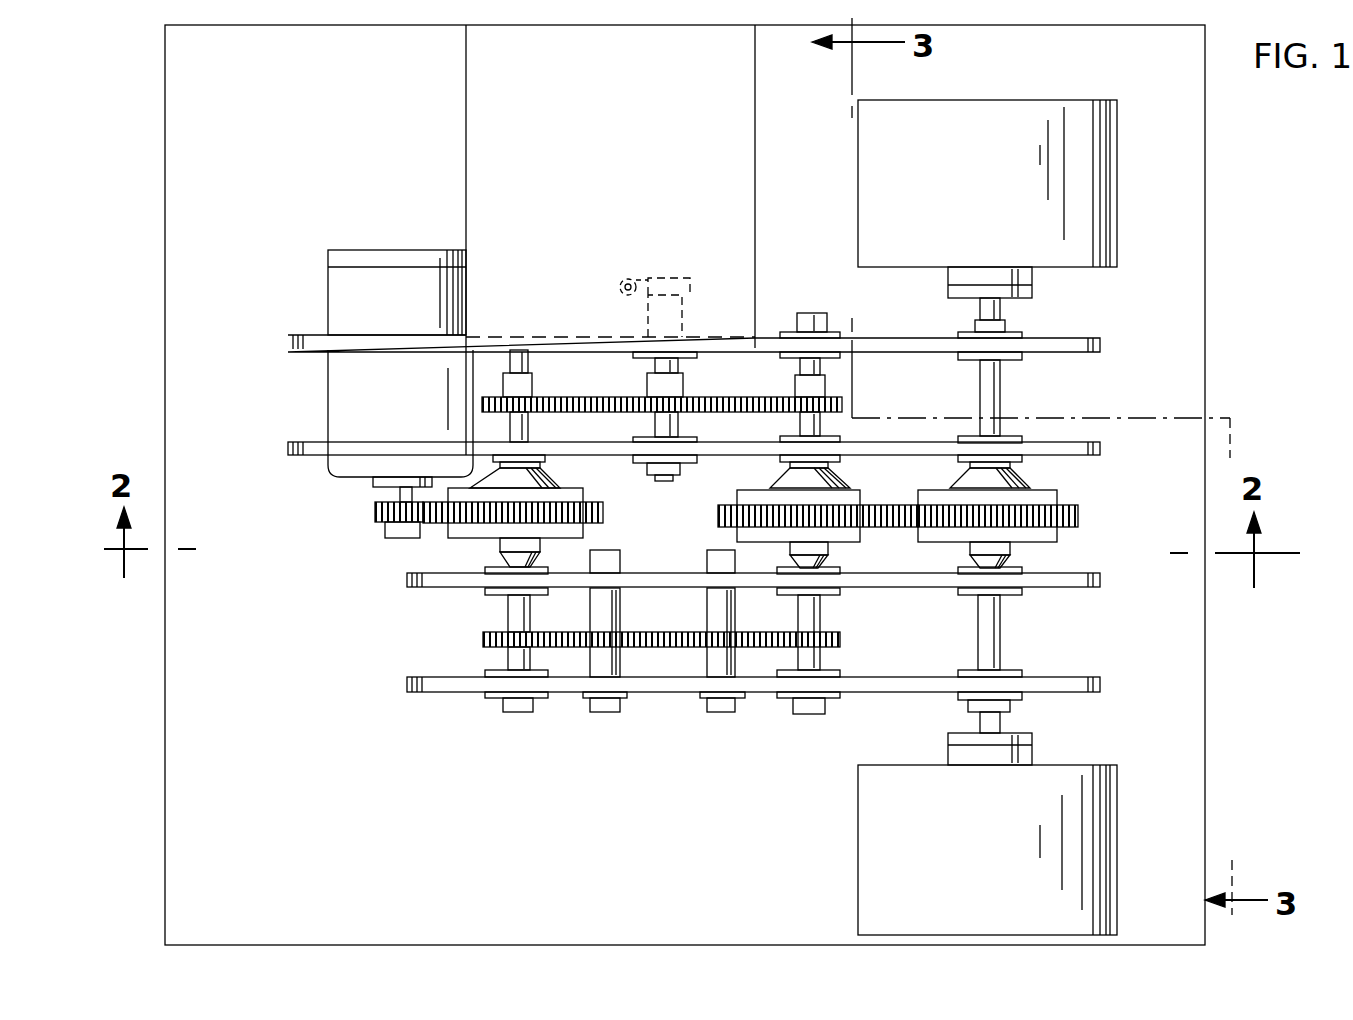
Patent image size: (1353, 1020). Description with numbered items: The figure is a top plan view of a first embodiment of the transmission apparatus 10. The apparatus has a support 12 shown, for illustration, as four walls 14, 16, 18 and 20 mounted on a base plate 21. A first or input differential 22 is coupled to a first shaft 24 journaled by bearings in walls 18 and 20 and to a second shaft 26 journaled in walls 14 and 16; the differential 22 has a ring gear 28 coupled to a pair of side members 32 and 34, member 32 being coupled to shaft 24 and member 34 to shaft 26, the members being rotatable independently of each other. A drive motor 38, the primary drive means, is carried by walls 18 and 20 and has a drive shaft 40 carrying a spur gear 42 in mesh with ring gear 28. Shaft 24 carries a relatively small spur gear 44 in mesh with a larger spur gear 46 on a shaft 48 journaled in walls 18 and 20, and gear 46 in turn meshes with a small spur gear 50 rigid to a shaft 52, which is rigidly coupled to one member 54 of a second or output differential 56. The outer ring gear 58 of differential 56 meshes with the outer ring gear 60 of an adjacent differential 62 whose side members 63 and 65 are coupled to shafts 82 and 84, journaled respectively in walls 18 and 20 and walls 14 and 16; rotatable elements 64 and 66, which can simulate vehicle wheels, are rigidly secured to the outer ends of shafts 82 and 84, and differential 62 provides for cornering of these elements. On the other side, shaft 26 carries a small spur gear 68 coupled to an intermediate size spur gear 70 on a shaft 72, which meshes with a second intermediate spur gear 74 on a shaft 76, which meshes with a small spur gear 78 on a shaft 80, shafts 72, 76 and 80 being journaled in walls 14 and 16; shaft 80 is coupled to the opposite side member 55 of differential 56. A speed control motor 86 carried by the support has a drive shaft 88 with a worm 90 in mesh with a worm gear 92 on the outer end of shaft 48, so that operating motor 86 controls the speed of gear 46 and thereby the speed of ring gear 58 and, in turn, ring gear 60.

The transmission apparatus 10 is at (1180, 380).
The support 12 is at (453, 693).
The wall 14 is at (421, 693).
The wall 16 is at (407, 580).
The wall 18 is at (288, 447).
The wall 20 is at (288, 342).
The base plate 21 is at (165, 738).
The first or input differential 22 is at (597, 500).
The first shaft 24 is at (528, 432).
The second shaft 26 is at (508, 615).
The ring gear 28 is at (603, 514).
The side member 32 is at (548, 472).
The side member 34 is at (487, 550).
The drive motor 38 is at (328, 296).
The drive shaft 40 is at (397, 492).
The spur gear 42 is at (380, 524).
The spur gear 44 is at (538, 398).
The spur gear 46 is at (593, 398).
The shaft 48 is at (683, 430).
The spur gear 50 is at (845, 408).
The shaft 52 is at (823, 368).
The member 54 is at (835, 484).
The side member 55 is at (828, 553).
The second or output differential 56 is at (722, 500).
The outer ring gear 58 is at (720, 515).
The outer ring gear 60 is at (1078, 516).
The differential 62 is at (1070, 502).
The side member 63 is at (1020, 486).
The rotatable element 64 is at (1117, 180).
The side member 65 is at (1020, 556).
The rotatable element 66 is at (1073, 765).
The spur gear 68 is at (483, 640).
The spur gear 70 is at (622, 616).
The shaft 72 is at (590, 605).
The spur gear 74 is at (705, 626).
The shaft 76 is at (735, 616).
The spur gear 78 is at (840, 647).
The shaft 80 is at (820, 620).
The shaft 82 is at (1000, 408).
The shaft 84 is at (1000, 637).
The speed control motor 86 is at (755, 240).
The drive shaft 88 is at (627, 278).
The worm 90 is at (620, 292).
The worm gear 92 is at (660, 278).